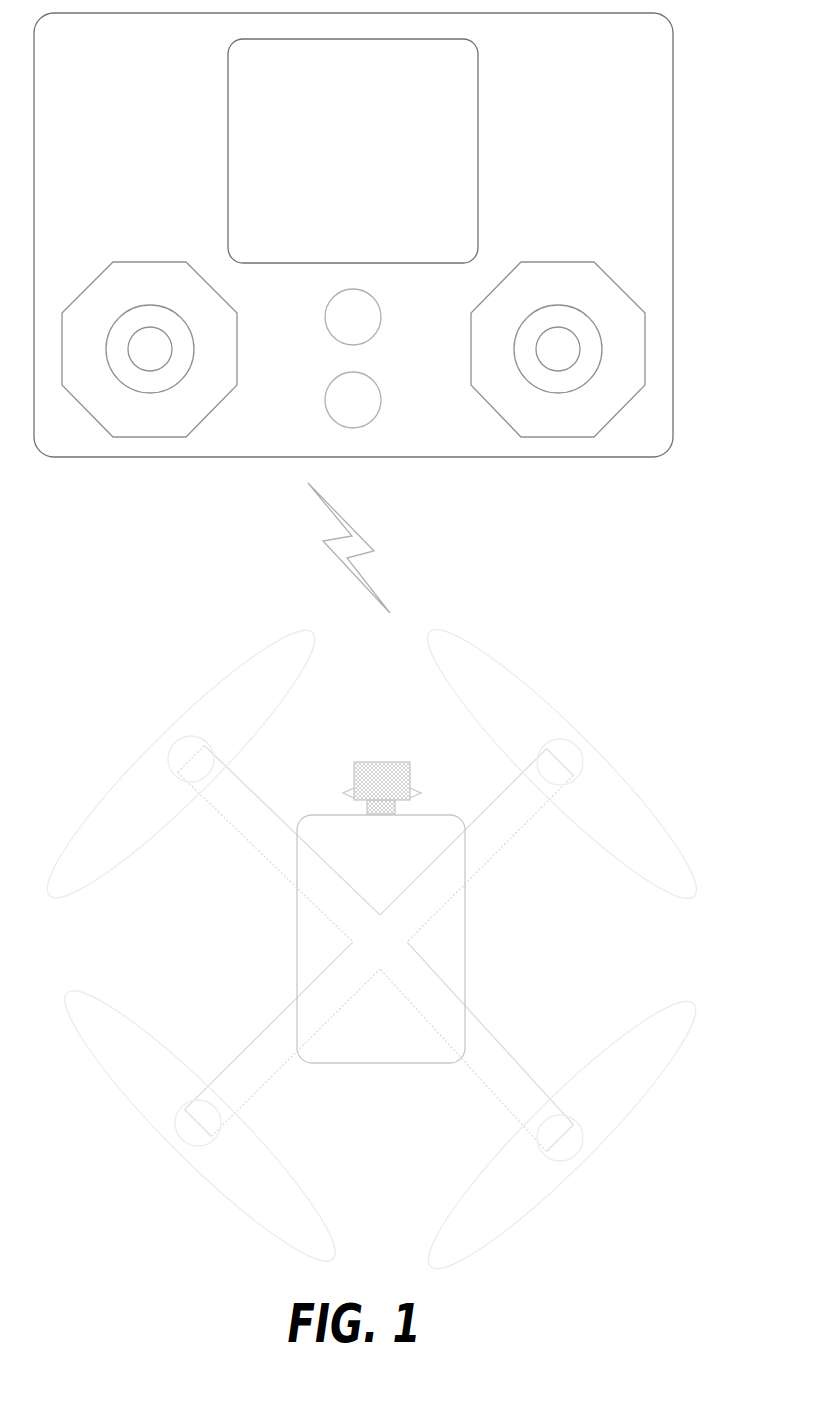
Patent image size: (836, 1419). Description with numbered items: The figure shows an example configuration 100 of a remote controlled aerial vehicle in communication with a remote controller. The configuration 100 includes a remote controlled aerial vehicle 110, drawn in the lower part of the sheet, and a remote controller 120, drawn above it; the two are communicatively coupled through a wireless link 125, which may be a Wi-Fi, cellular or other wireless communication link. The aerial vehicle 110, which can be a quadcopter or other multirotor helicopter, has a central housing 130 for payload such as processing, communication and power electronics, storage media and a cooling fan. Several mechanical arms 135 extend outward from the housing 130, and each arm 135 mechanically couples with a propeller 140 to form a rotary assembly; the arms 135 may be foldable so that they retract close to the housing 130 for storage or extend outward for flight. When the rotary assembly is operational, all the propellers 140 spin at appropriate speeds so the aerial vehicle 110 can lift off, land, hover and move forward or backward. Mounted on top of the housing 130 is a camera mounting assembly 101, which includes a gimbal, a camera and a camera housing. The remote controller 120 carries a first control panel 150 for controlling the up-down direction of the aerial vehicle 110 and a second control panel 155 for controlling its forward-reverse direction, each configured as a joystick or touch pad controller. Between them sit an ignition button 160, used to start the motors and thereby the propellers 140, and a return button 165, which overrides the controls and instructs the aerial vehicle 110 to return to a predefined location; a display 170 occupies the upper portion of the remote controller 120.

The configuration 100 is at (385, 652).
The camera mounting assembly 101 is at (383, 745).
The remote controlled aerial vehicle 110 is at (371, 949).
The remote controller 120 is at (390, 256).
The wireless link 125 is at (368, 548).
The housing 130 is at (380, 1063).
The mechanical arms 135 is at (287, 820).
The propellers 140 is at (108, 797).
The first control panel 150 is at (127, 437).
The second control panel 155 is at (573, 437).
The ignition button 160 is at (378, 325).
The return button 165 is at (378, 410).
The display 170 is at (478, 133).